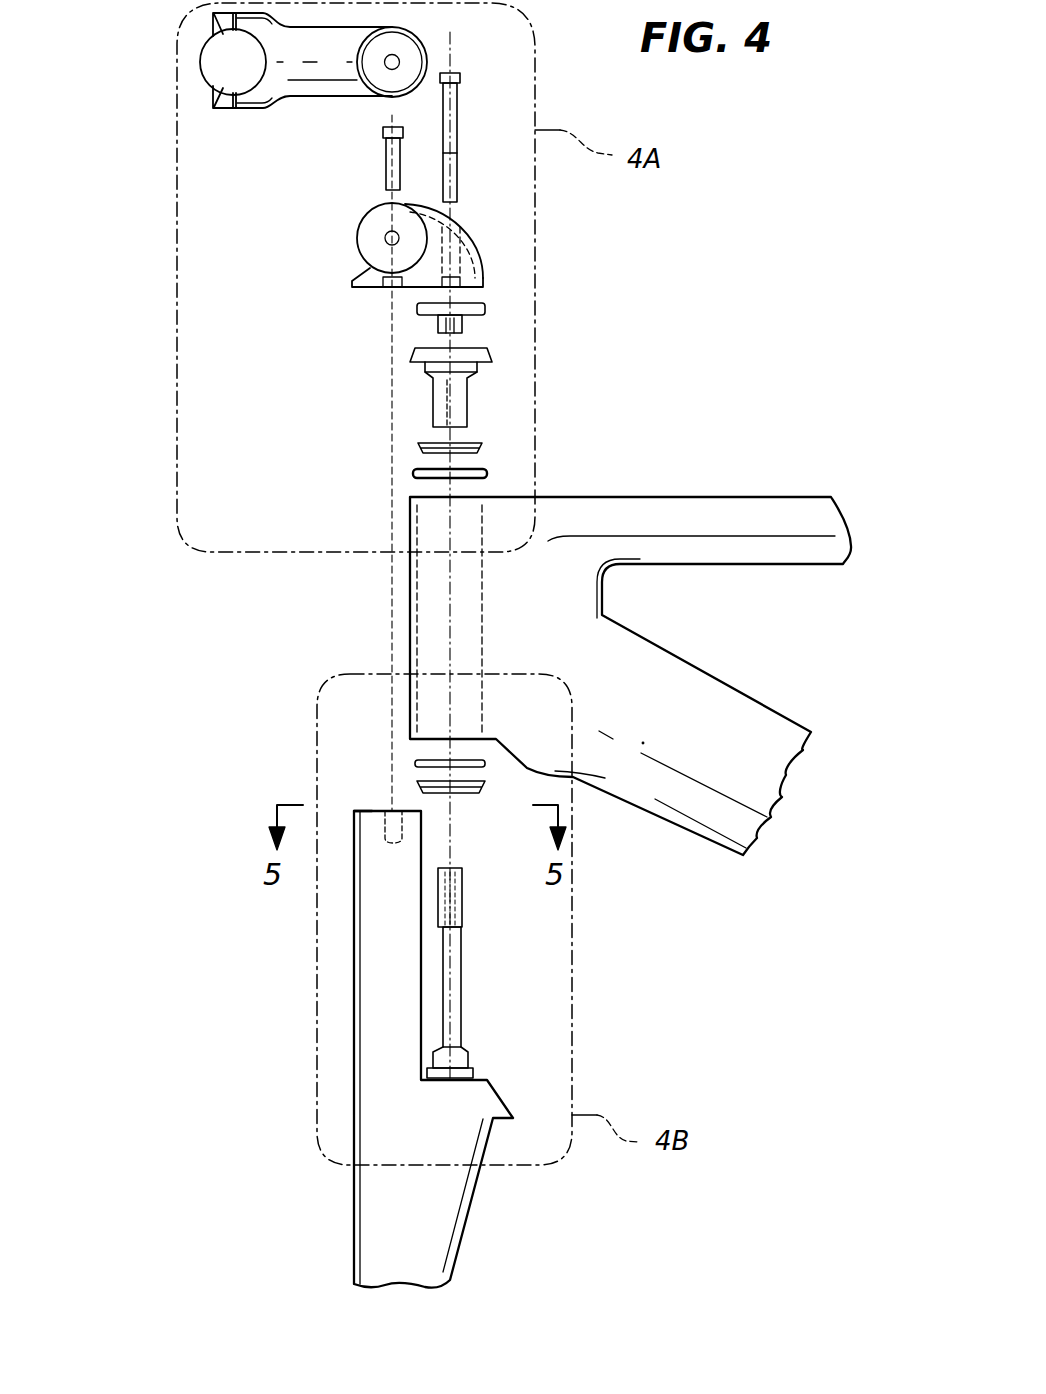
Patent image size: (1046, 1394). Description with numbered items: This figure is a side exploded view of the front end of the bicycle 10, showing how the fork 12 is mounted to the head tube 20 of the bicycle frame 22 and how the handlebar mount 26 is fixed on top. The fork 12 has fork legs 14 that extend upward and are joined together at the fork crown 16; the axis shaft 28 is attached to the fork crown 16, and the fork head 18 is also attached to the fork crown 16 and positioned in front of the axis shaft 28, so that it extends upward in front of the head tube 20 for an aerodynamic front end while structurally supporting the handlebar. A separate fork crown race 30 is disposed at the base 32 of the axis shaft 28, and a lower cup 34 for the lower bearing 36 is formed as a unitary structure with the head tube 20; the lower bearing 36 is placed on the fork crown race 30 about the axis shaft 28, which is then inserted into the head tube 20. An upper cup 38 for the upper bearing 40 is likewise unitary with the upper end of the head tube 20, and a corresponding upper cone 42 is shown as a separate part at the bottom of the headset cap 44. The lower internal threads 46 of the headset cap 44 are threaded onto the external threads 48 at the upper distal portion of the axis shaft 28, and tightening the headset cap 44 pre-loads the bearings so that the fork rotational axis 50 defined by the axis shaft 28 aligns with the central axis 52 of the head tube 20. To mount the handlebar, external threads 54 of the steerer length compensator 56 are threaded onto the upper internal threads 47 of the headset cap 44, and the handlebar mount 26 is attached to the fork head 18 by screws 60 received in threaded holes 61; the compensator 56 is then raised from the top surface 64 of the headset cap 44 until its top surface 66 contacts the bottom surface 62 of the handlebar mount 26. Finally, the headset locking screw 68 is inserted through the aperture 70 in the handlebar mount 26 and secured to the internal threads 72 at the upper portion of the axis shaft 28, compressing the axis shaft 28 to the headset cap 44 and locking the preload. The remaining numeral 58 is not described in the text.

The bicycle 10 is at (105, 1272).
The fork 12 is at (243, 1272).
The fork legs 14 is at (367, 1232).
The fork crown 16 is at (308, 1078).
The fork head 18 is at (380, 992).
The head tube 20 is at (304, 497).
The bicycle frame 22 is at (778, 497).
The handlebar mount 26 is at (170, 290).
The axis shaft 28 is at (479, 952).
The fork crown race 30 is at (415, 790).
The base 32 is at (505, 1050).
The lower cup 34 is at (392, 697).
The lower bearing 36 is at (412, 762).
The upper cup 38 is at (392, 494).
The upper bearing 40 is at (415, 470).
The upper cone 42 is at (420, 445).
The headset cap 44 is at (473, 381).
The lower internal threads 46 is at (448, 409).
The upper internal threads 47 is at (455, 355).
The external threads 48 is at (461, 893).
The fork rotational axis 50 is at (453, 993).
The central axis 52 is at (447, 602).
The external threads 54 is at (464, 325).
The steerer length compensator 56 is at (513, 306).
The slot 58 is at (360, 808).
The screws 60 is at (384, 156).
The threaded holes 61 is at (386, 838).
The bottom surface 62 is at (377, 290).
The top surface 64 is at (417, 349).
The top surface 66 is at (486, 301).
The headset locking screw 68 is at (462, 107).
The aperture 70 is at (486, 272).
The internal threads 72 is at (462, 880).